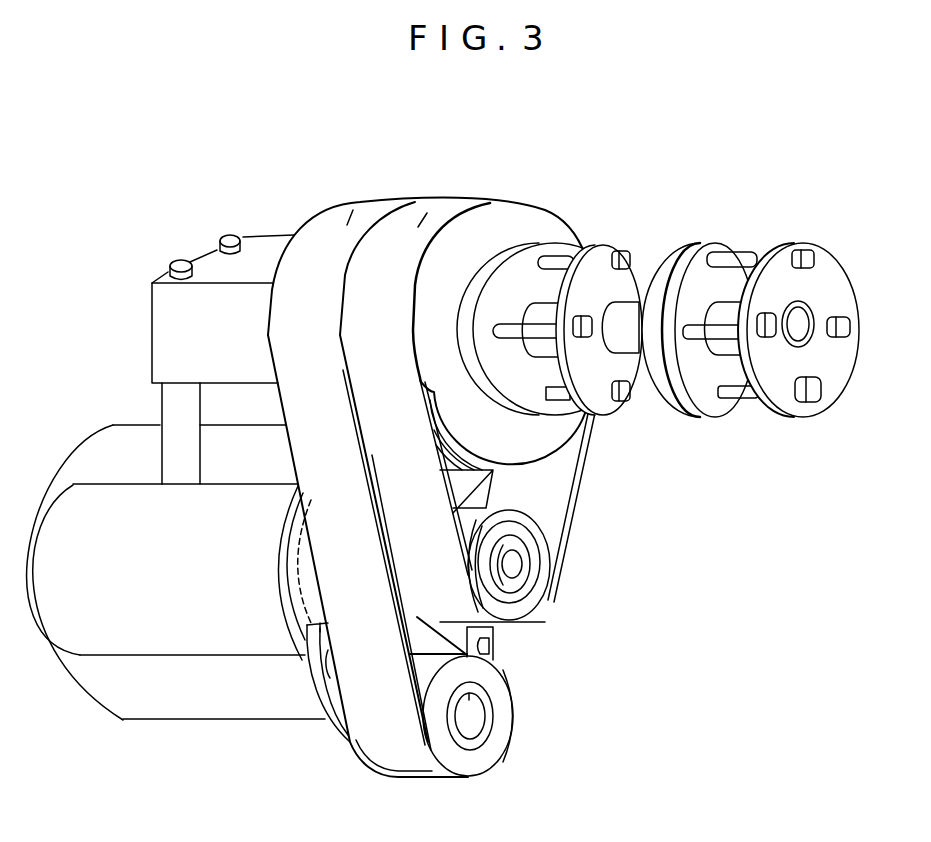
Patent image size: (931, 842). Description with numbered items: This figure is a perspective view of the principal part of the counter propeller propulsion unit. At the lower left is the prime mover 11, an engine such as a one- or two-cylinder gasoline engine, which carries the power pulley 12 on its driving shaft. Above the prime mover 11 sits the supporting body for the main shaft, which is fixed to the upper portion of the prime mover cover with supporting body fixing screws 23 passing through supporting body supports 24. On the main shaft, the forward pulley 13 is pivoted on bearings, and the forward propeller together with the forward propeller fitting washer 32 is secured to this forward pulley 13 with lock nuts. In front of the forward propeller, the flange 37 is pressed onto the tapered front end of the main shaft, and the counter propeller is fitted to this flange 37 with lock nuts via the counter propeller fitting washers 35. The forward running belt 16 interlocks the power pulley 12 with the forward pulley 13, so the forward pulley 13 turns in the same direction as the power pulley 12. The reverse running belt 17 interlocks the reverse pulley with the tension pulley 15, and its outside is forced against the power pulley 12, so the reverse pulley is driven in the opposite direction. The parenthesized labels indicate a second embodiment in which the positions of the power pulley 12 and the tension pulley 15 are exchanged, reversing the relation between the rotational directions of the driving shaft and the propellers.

The prime mover 11 is at (190, 628).
The power pulley 12 is at (541, 602).
The forward pulley 13 is at (533, 443).
The tension pulley 15 is at (541, 706).
The forward running belt 16 is at (438, 200).
The reverse running belt 17 is at (362, 200).
The supporting body fixing screws 23 is at (177, 262).
The supporting body supports 24 is at (162, 400).
The forward propeller fitting washer 32 is at (641, 400).
The counter propeller fitting washers 35 is at (807, 402).
The flange 37 is at (721, 395).